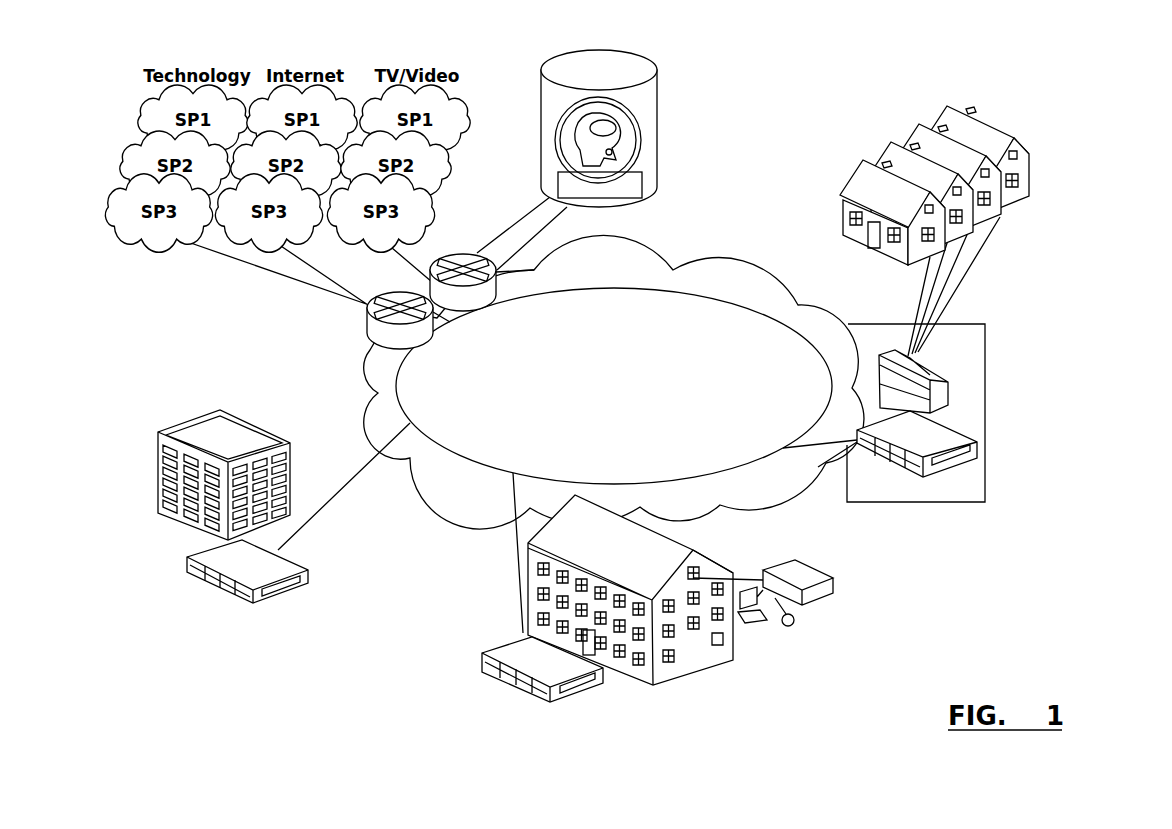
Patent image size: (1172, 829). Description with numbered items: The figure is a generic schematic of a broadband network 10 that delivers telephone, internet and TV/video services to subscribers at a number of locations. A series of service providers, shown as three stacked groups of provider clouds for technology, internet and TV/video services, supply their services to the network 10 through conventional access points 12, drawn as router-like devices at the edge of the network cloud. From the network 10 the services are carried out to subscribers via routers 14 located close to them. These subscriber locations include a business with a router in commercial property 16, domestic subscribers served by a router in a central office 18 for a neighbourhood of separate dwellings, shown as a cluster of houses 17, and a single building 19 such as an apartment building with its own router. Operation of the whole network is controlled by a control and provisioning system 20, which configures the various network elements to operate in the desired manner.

The network 10 is at (601, 393).
The access points 12 is at (368, 325).
The routers 14 is at (280, 597).
The commercial property 16 is at (158, 478).
The houses 17 is at (1033, 178).
The central office 18 is at (985, 393).
The single building 19 is at (695, 672).
The control and provisioning system 20 is at (657, 125).